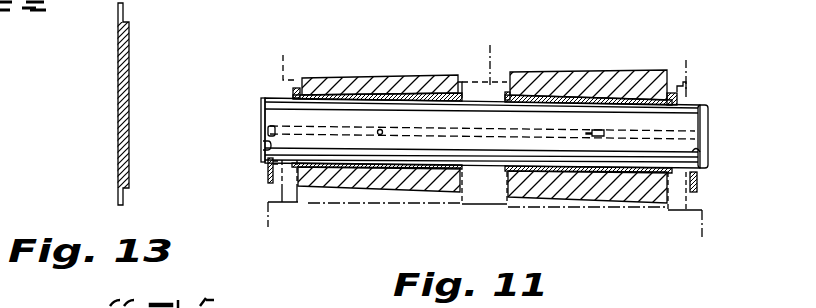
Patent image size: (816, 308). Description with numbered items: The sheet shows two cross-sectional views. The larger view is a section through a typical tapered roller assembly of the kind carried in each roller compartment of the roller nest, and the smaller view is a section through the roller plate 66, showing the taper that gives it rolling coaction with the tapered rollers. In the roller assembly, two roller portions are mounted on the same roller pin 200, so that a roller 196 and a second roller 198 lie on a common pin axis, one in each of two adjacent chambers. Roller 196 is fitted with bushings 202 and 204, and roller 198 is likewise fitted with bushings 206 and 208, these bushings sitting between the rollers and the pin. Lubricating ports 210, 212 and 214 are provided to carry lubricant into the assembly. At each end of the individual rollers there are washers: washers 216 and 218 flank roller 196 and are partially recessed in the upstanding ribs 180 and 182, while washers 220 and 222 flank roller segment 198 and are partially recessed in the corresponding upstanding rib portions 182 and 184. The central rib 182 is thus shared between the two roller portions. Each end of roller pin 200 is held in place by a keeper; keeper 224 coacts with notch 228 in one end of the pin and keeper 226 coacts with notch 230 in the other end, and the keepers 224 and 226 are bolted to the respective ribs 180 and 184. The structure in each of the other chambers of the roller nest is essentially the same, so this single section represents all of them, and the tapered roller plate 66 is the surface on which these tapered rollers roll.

In FIG. 13, the roller plate 66 is at (117, 104).
In FIG. 11, the upstanding rib 180 is at (283, 55).
In FIG. 11, the upstanding rib 182 is at (499, 38).
In FIG. 11, the upstanding rib 184 is at (692, 57).
In FIG. 11, the roller 196 is at (368, 190).
In FIG. 11, the roller 198 is at (588, 187).
In FIG. 11, the roller pin 200 is at (695, 128).
In FIG. 11, the bushing 202 is at (327, 169).
In FIG. 11, the bushing 204 is at (437, 192).
In FIG. 11, the bushing 206 is at (552, 172).
In FIG. 11, the bushing 208 is at (643, 172).
In FIG. 11, the lubricating port 210 is at (322, 122).
In FIG. 11, the lubricating port 212 is at (380, 129).
In FIG. 11, the lubricating port 214 is at (595, 130).
In FIG. 11, the washer 216 is at (294, 90).
In FIG. 11, the washer 218 is at (470, 82).
In FIG. 11, the washer 220 is at (507, 82).
In FIG. 11, the washer 222 is at (690, 93).
In FIG. 11, the keeper 224 is at (268, 173).
In FIG. 11, the keeper 226 is at (698, 182).
In FIG. 11, the notch 228 is at (263, 146).
In FIG. 11, the notch 230 is at (700, 150).